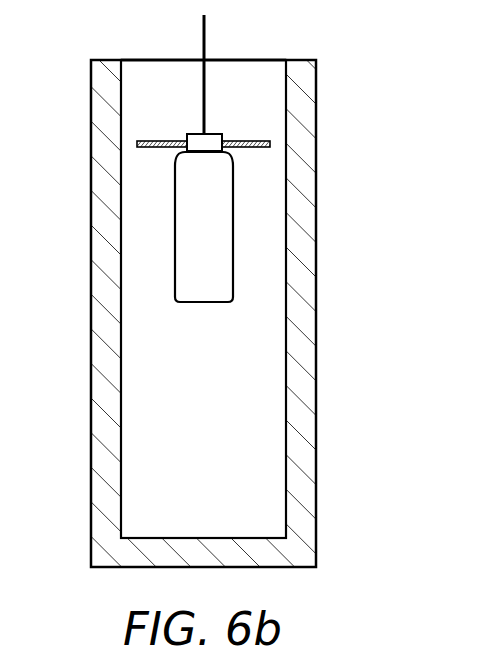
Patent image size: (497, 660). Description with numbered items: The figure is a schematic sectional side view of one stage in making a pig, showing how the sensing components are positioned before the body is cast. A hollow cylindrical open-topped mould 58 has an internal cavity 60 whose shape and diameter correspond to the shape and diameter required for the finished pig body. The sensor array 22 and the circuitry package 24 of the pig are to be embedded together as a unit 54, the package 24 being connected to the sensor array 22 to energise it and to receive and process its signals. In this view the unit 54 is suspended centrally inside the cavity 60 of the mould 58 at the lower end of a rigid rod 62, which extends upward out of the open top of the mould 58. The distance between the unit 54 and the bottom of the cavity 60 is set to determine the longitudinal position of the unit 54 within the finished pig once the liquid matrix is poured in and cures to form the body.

The sensor array 22 is at (212, 138).
The circuitry package 24 is at (203, 302).
The unit 54 is at (162, 212).
The mould 58 is at (305, 245).
The internal cavity 60 is at (144, 72).
The rigid rod 62 is at (205, 36).